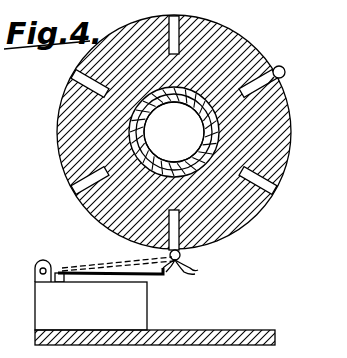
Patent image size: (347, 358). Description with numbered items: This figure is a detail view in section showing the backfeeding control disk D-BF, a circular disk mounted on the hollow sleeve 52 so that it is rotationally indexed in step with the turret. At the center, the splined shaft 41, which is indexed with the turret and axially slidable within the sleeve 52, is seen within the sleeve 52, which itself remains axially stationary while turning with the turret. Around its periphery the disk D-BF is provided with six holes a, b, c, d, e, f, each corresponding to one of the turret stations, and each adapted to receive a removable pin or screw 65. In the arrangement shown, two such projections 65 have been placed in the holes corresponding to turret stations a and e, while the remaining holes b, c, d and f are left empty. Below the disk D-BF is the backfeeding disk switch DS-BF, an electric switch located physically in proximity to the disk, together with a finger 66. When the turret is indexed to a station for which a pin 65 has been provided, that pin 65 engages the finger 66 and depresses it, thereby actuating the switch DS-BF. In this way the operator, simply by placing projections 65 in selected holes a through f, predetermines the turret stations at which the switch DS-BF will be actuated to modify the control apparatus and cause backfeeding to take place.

The splined shaft 41 is at (204, 117).
The hollow mating sleeve 52 is at (219, 121).
The removable pins or screws 65 is at (285, 70).
The finger 66 is at (168, 278).
The backfeeding control disk D-BF is at (226, 45).
The backfeeding disk switch DS-BF is at (118, 318).
The hole a is at (183, 211).
The hole b is at (124, 182).
The hole c is at (121, 105).
The hole d is at (181, 70).
The hole e is at (240, 106).
The hole f is at (236, 173).